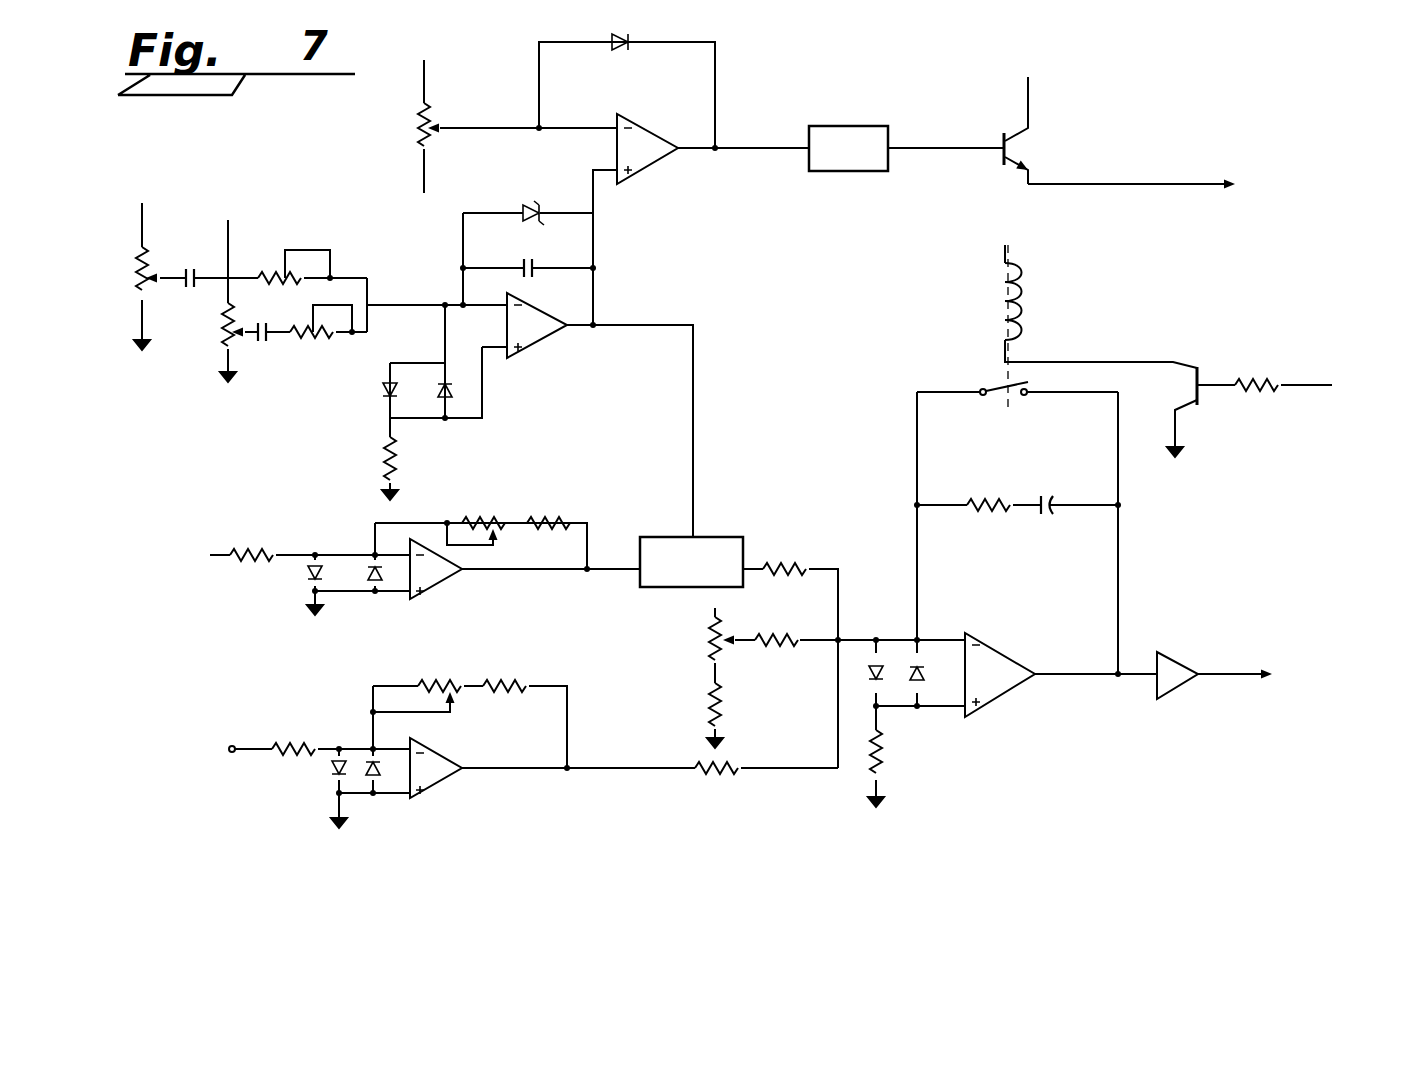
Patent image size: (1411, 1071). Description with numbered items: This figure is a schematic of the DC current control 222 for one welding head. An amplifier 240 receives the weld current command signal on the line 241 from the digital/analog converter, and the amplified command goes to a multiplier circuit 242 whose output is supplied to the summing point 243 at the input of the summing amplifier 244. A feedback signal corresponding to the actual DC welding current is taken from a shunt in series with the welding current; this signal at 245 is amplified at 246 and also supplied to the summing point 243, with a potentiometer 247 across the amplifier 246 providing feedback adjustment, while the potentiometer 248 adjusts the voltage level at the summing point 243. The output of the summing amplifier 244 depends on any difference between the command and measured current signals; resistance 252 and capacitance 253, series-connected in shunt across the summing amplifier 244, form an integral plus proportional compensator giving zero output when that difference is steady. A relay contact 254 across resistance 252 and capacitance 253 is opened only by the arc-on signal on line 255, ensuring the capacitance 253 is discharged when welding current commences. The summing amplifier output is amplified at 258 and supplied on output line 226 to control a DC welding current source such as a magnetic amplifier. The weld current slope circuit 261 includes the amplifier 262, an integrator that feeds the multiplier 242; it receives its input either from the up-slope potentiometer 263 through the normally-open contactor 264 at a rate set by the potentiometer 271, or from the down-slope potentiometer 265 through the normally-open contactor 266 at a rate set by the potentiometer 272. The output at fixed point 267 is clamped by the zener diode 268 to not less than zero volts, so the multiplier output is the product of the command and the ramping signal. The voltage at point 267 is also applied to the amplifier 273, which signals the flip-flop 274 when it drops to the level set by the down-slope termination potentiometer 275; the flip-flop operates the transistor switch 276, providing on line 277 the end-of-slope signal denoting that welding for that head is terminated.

The weld current slope circuit 261 is at (245, 154).
The up-slope potentiometer 263 is at (138, 260).
The normally-open contactor 264 is at (187, 265).
The down-slope potentiometer 265 is at (222, 323).
The normally-open contactor 266 is at (262, 348).
The potentiometer 271 is at (275, 270).
The potentiometer 272 is at (300, 327).
The amplifier 262 is at (540, 343).
The fixed point 267 is at (597, 322).
The zener diode 268 is at (527, 208).
The amplifier 273 is at (650, 168).
The flip-flop 274 is at (868, 125).
The down-slope termination potentiometer 275 is at (420, 142).
The transistor switch 276 is at (1015, 148).
The line 277 is at (1165, 183).
The relay contact 254 is at (1030, 385).
The line 255 is at (1310, 383).
The resistance 252 is at (993, 476).
The capacitance 253 is at (1050, 497).
The summing amplifier 244 is at (1015, 690).
The amplifier 258 is at (1178, 697).
The output line to mag-amp DC control 226 is at (1219, 672).
The multiplier circuit 242 is at (744, 553).
The summing point 243 is at (843, 637).
The potentiometer 248 is at (712, 642).
The line 241 is at (222, 553).
The amplifier 240 is at (440, 590).
The signal from current shunt 245 is at (250, 745).
The potentiometer 247 is at (468, 650).
The amplifier 246 is at (440, 780).
The DC current control 222 is at (541, 812).